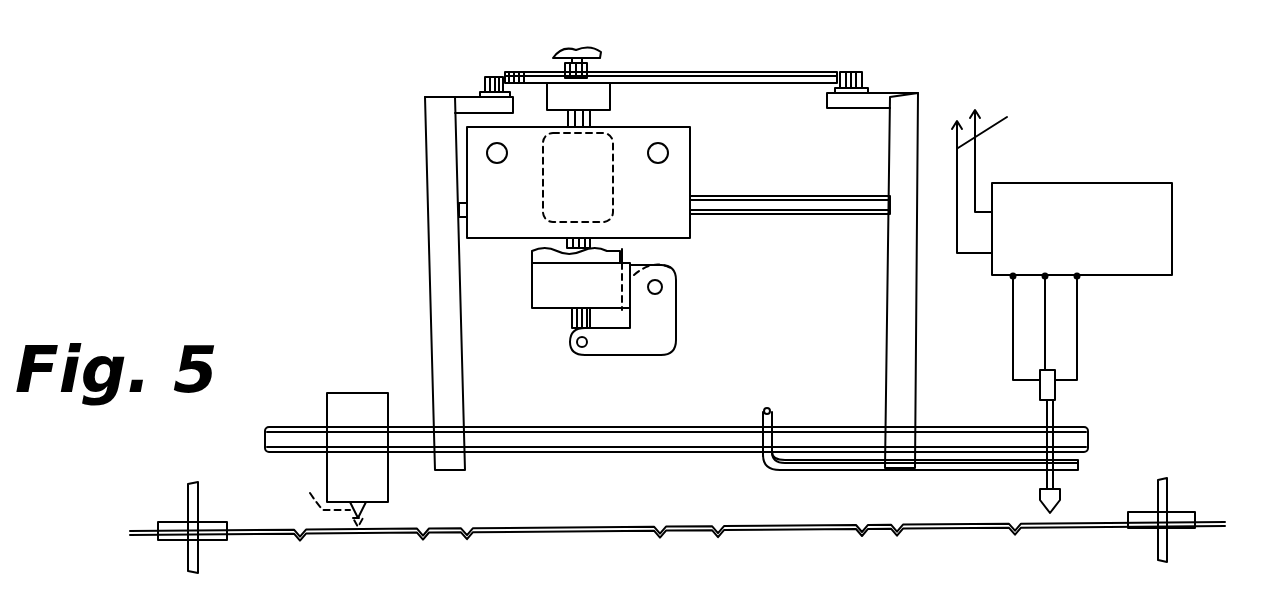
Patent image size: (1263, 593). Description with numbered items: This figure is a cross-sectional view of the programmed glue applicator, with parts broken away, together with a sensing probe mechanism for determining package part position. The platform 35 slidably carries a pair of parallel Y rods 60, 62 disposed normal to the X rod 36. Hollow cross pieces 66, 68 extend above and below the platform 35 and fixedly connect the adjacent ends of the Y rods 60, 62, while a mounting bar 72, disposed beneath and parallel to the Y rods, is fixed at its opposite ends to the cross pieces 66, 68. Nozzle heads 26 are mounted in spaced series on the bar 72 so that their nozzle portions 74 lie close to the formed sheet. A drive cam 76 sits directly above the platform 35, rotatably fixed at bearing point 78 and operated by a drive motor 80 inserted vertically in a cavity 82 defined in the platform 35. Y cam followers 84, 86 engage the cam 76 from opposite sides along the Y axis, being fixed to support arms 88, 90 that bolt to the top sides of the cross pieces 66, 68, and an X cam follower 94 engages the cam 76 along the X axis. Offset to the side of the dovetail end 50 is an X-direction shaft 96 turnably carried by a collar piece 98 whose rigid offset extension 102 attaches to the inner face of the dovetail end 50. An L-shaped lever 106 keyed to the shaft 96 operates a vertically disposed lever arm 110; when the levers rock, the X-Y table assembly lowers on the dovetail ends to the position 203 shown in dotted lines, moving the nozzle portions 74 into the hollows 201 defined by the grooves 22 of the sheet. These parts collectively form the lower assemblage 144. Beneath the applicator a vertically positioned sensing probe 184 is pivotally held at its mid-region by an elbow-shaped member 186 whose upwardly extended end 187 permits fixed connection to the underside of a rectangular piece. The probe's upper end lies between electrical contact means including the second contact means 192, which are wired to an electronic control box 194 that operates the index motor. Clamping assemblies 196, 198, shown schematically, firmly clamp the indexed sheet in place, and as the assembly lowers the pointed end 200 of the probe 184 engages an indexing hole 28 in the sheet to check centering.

The peripherally continuous groove 22 is at (425, 536).
The nozzle head 26 is at (345, 395).
The indexing hole 28 is at (1052, 524).
The platform 35 is at (684, 225).
The X rod 36 is at (808, 198).
The dovetail end 50 is at (550, 262).
The Y rod 60 is at (497, 163).
The Y rod 62 is at (668, 153).
The hollow cross piece 66 is at (440, 291).
The hollow cross piece 68 is at (900, 359).
The mounting bar 72 is at (410, 437).
The nozzle portion 74 is at (370, 512).
The drive cam 76 is at (728, 72).
The bearing point 78 is at (566, 50).
The drive motor 80 is at (604, 185).
The cavity 82 is at (540, 210).
The Y cam follower 84 is at (490, 84).
The Y cam follower 86 is at (864, 80).
The support arm 88 is at (472, 102).
The support arm 90 is at (877, 103).
The X cam follower 94 is at (588, 72).
The shaft 96 is at (661, 292).
The collar piece 98 is at (655, 258).
The offset extension 102 is at (548, 302).
The L-shaped lever 106 is at (672, 342).
The lever arm 110 is at (578, 320).
The lower assemblage 144 is at (410, 212).
The sensing probe 184 is at (1056, 480).
The elbow-shaped member 186 is at (832, 471).
The upwardly extended end 187 is at (775, 412).
The second electrical contact means 192 is at (1057, 386).
The electronic control box 194 is at (1158, 266).
The clamping assembly 196 is at (188, 514).
The clamping assembly 198 is at (1166, 497).
The pointed end 200 is at (1040, 497).
The hollow 201 is at (296, 522).
The lowered position 203 is at (310, 492).